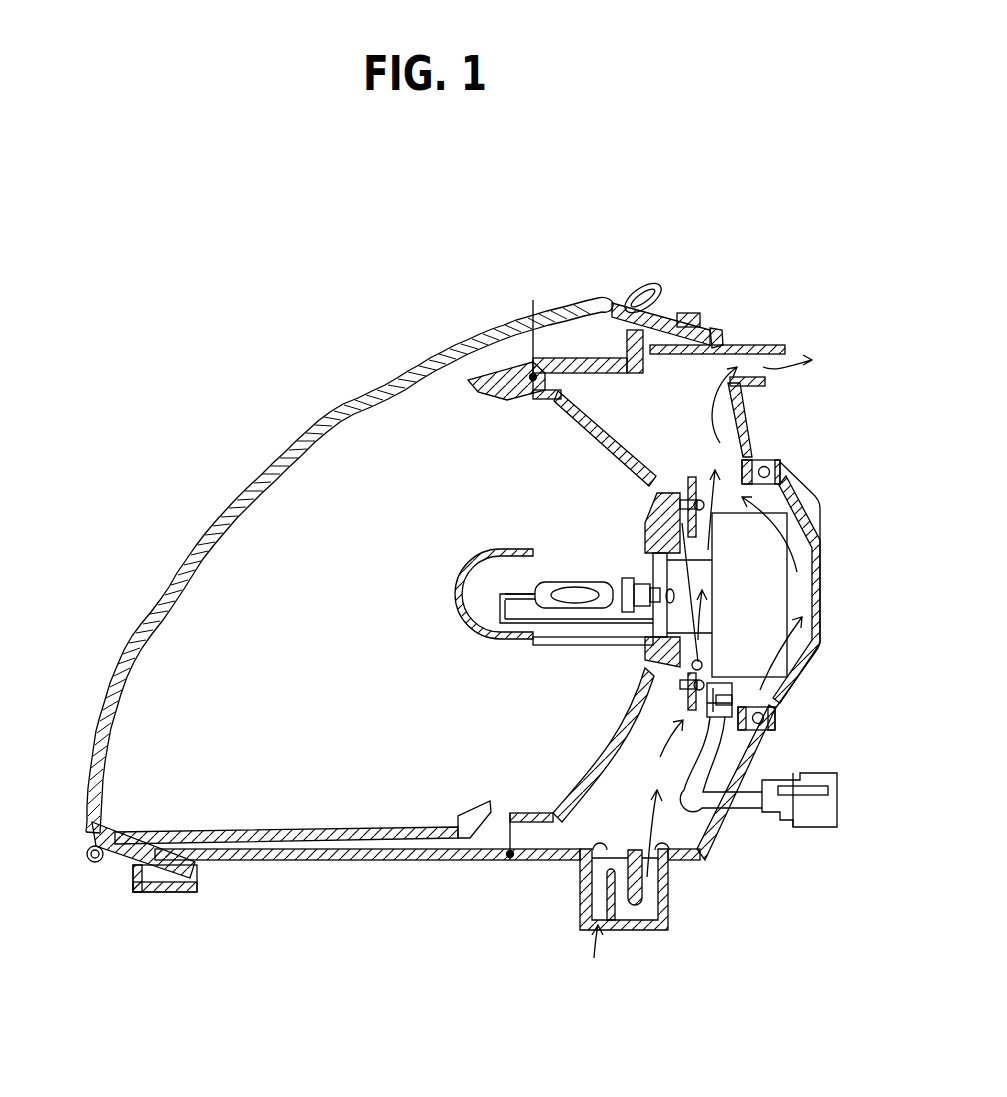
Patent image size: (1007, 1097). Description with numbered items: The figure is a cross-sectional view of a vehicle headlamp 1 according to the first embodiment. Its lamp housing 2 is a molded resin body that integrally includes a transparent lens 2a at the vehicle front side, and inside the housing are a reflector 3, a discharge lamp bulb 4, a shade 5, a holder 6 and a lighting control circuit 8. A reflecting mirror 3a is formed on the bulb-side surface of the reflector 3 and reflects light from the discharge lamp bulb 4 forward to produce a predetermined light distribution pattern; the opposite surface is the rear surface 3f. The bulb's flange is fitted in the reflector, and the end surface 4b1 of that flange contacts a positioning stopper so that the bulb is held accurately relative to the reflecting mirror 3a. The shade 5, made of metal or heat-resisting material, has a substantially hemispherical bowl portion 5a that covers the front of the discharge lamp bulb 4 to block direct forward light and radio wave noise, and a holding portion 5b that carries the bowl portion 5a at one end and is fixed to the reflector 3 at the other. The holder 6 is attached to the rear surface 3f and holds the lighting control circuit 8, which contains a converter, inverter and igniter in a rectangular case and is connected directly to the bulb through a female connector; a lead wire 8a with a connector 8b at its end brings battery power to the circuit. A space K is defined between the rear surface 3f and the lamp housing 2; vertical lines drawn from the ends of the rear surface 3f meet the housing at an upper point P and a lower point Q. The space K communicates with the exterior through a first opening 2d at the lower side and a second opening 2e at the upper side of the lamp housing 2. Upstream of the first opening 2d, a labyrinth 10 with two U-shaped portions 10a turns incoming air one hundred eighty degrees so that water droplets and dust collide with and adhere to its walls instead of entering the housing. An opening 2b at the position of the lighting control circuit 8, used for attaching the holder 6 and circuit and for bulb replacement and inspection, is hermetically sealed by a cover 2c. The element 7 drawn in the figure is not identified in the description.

The vehicle headlamp 1 is at (170, 250).
The lamp housing 2 is at (234, 486).
The lens 2a is at (497, 328).
The opening 2b is at (783, 460).
The cover 2c is at (813, 680).
The first opening 2d is at (667, 860).
The second opening 2e is at (817, 356).
The reflector 3 is at (527, 812).
The reflecting mirror 3a is at (543, 447).
The rear surface 3f is at (543, 447).
The discharge lamp bulb 4 is at (542, 540).
The end surface 4b1 is at (510, 860).
The shade 5 is at (485, 590).
The bowl portion 5a is at (462, 602).
The holding portion 5b is at (553, 643).
The holder 6 is at (663, 420).
The bulb holder 7 is at (582, 578).
The lighting control circuit 8 is at (745, 735).
The lead wire 8a is at (683, 800).
The connector 8b is at (778, 815).
The labyrinth 10 is at (627, 893).
The U-shaped portion 10a is at (647, 627).
The space K is at (682, 420).
The upper intersection point P is at (548, 360).
The lower intersection point Q is at (508, 856).